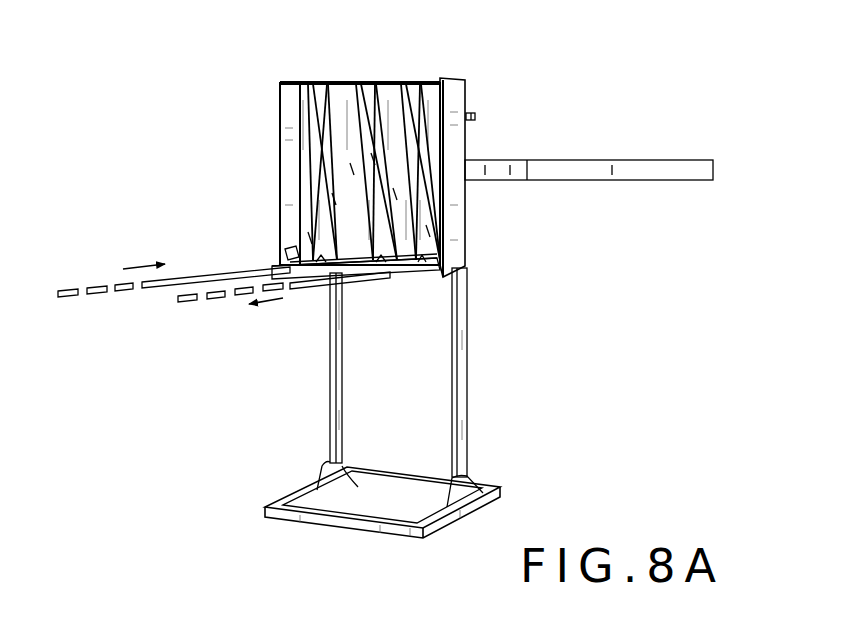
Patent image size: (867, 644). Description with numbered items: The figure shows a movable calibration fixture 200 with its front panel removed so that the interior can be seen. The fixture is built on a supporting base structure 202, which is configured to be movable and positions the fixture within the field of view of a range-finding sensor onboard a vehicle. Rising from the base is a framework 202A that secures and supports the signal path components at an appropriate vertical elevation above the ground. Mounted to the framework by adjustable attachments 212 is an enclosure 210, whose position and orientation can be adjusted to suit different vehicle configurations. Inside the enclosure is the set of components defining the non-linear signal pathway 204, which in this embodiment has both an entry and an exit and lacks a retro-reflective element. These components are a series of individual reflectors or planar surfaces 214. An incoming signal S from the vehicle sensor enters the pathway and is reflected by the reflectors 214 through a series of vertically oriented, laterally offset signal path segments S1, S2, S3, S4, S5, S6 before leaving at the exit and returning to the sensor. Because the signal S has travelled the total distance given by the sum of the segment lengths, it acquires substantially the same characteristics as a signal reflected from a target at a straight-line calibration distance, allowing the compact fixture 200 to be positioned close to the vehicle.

The movable calibration fixture 200 is at (385, 276).
The supporting base structure 202 is at (489, 466).
The framework 202A is at (479, 394).
The non-linear signal pathway 204 is at (343, 66).
The enclosure 210 is at (448, 145).
The adjustable attachments 212 is at (479, 104).
The reflectors 214 is at (318, 82).
The signal S is at (195, 272).
The signal path segment S1 is at (308, 232).
The signal path segment S2 is at (332, 193).
The signal path segment S3 is at (350, 163).
The signal path segment S4 is at (375, 165).
The signal path segment S5 is at (397, 200).
The signal path segment S6 is at (430, 237).